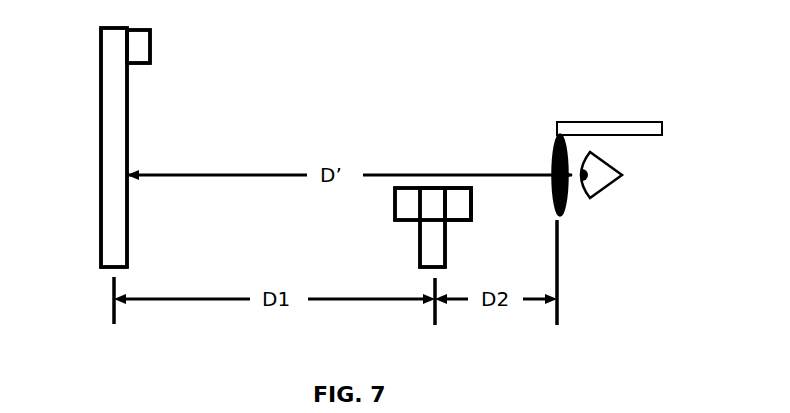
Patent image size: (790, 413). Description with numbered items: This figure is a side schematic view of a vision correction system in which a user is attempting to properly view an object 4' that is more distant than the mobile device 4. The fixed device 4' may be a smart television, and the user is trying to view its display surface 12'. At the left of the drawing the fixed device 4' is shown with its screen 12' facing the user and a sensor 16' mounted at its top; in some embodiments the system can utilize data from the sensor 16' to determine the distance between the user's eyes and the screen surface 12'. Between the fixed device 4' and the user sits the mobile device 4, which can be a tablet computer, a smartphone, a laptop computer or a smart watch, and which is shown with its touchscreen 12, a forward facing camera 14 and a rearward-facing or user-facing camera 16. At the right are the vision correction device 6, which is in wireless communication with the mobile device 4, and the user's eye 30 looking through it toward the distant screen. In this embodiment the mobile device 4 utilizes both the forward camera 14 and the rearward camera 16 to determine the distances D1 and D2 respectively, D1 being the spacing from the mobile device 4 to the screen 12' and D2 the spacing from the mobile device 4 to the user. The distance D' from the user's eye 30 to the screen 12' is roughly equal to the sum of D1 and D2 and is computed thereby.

The mobile device 4 is at (387, 228).
The touchscreen 12 is at (471, 227).
The forward facing camera 14 is at (393, 200).
The rearward-facing camera 16 is at (482, 204).
The fixed device 4' is at (90, 147).
The display surface 12' is at (164, 147).
The sensor 16' is at (189, 46).
The vision correction device 6 is at (587, 110).
The user's eye 30 is at (605, 188).